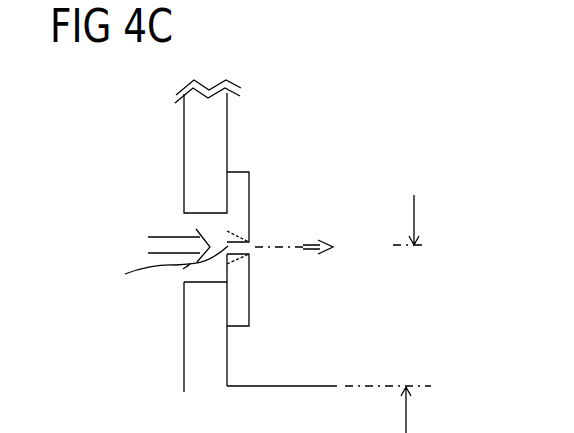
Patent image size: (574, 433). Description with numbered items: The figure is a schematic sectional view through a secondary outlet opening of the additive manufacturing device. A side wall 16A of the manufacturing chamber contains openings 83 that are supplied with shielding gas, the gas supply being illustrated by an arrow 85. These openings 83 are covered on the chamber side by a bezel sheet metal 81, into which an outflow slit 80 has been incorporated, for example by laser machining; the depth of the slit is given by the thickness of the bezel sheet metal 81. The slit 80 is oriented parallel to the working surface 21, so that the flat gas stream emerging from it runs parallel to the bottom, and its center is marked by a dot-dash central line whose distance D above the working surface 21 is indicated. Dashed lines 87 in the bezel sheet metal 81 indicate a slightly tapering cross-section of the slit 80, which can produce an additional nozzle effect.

The side wall 16A is at (185, 142).
The arrow 85 is at (157, 237).
The bezel sheet metal 81 is at (249, 210).
The dashed lines 87 is at (249, 262).
The outflow slit 80 is at (125, 274).
The openings 83 is at (184, 273).
The distance D is at (418, 272).
The working surface 21 is at (312, 386).